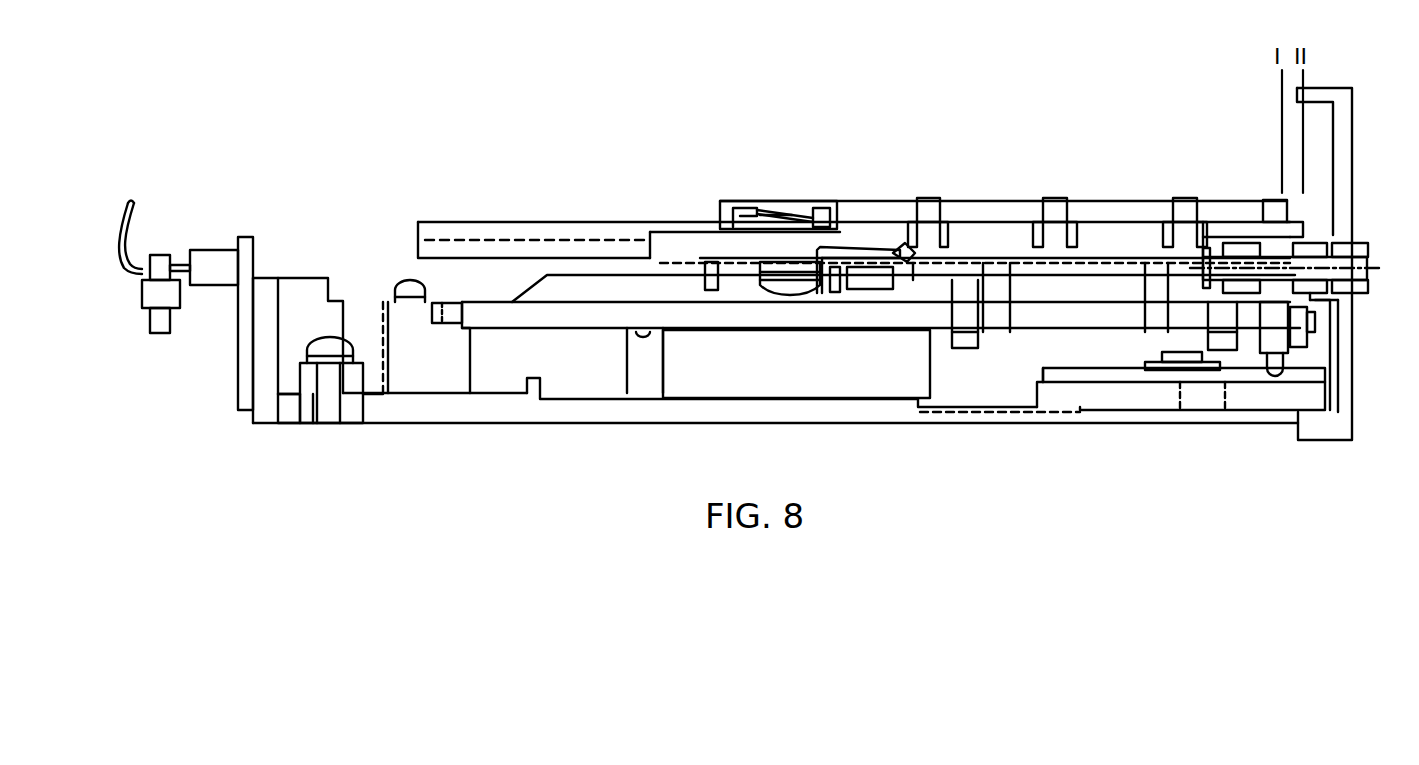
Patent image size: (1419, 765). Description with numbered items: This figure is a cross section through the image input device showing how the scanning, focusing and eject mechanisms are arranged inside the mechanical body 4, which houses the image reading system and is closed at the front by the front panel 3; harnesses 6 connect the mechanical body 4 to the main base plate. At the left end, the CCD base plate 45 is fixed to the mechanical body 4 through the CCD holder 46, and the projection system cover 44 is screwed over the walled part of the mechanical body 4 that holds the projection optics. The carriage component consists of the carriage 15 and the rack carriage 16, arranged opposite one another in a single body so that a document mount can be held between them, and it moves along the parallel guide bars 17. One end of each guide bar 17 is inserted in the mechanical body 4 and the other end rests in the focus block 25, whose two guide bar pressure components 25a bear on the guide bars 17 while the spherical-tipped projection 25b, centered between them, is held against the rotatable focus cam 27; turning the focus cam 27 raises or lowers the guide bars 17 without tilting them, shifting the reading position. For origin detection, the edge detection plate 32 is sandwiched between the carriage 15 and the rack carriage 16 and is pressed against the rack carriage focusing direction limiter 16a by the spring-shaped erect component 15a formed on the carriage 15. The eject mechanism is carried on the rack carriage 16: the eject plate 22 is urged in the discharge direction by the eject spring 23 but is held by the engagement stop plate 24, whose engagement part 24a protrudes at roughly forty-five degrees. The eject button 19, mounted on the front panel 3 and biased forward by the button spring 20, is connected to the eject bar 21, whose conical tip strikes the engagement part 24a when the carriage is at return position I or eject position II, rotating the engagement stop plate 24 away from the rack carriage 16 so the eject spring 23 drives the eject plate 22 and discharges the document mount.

The front panel 3 is at (1352, 128).
The mechanical body 4 is at (707, 417).
The harness 6 is at (143, 228).
The carriage 15 is at (992, 203).
The erect component 15a is at (770, 220).
The rack carriage 16 is at (1107, 233).
The rack carriage focusing direction limiter 16a is at (775, 292).
The guide bar 17 is at (562, 328).
The eject button 19 is at (1360, 253).
The button spring 20 is at (1315, 300).
The eject bar 21 is at (1158, 267).
The eject plate 22 is at (845, 270).
The eject spring 23 is at (833, 270).
The engagement stop plate 24 is at (873, 267).
The engagement part 24a is at (907, 267).
The focus block 25 is at (1303, 337).
The guide bar pressure component 25a is at (1303, 323).
The projection 25b is at (1263, 367).
The focus cam 27 is at (1113, 395).
The edge detection plate 32 is at (765, 227).
The projection system cover 44 is at (618, 292).
The CCD base plate 45 is at (238, 373).
The CCD holder 46 is at (263, 400).